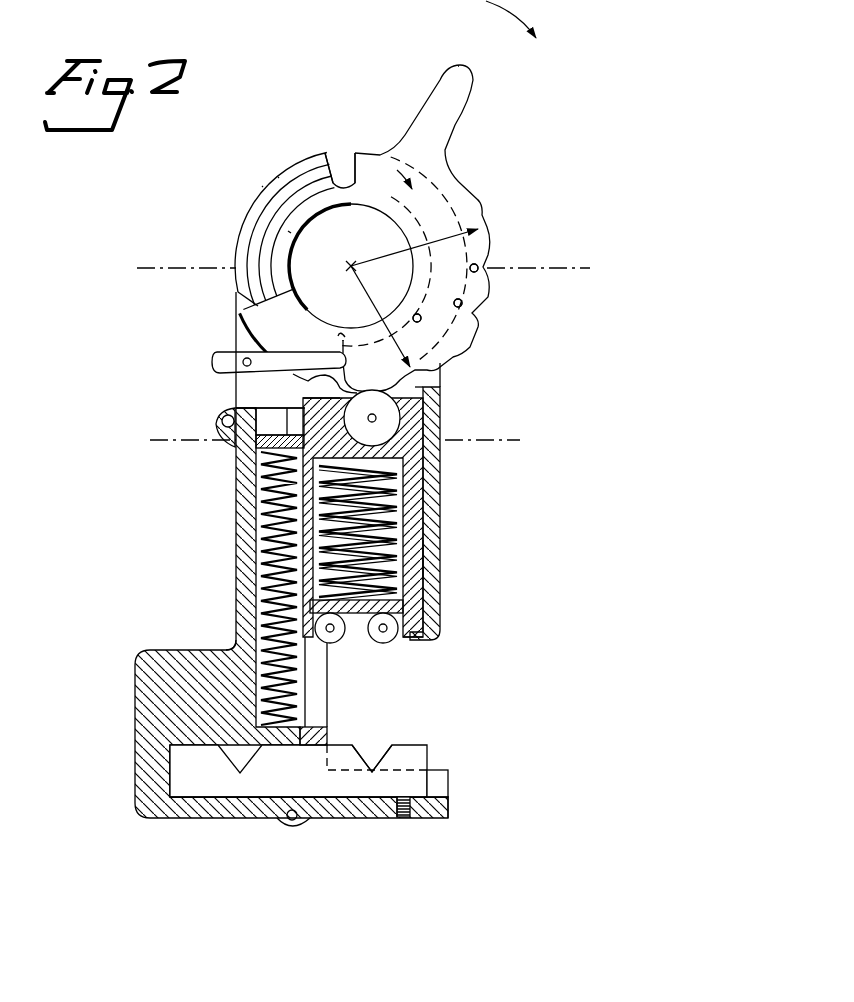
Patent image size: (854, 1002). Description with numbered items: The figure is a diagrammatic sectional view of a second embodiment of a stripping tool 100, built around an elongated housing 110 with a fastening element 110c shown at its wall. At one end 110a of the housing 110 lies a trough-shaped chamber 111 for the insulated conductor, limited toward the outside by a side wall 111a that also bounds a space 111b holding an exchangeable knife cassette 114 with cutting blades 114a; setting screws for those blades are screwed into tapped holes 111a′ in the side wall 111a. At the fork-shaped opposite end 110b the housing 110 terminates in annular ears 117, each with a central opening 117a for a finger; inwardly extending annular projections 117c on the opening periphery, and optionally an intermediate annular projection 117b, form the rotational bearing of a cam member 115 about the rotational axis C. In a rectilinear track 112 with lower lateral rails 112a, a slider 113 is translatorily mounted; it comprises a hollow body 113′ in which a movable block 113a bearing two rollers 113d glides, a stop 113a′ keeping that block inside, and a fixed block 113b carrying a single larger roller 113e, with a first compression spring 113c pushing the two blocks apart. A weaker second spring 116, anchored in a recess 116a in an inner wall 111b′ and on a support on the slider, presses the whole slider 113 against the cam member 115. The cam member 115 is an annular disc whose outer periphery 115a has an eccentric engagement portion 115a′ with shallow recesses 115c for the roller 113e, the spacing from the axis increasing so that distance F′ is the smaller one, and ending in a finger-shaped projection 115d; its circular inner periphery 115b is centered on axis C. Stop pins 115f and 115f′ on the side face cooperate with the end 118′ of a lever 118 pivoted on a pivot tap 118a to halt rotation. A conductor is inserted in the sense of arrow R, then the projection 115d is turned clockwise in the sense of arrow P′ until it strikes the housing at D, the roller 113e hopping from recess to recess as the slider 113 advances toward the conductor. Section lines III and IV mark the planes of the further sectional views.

The stripping tool 100 is at (510, 192).
The housing 110 is at (236, 540).
The end of housing 110a is at (448, 810).
The fork-shaped end of housing 110b is at (238, 406).
The fastening screw / pin 110c is at (221, 418).
The chamber 111 is at (375, 707).
The side wall 111a is at (330, 812).
The tapped holes 111a′ is at (406, 818).
The space 111b is at (442, 780).
The inner wall 111b′ is at (318, 733).
The track 112 is at (422, 530).
The lower lateral rails 112a is at (258, 628).
The slider 113 is at (410, 472).
The hollow body 113′ is at (425, 556).
The movable block 113a is at (403, 615).
The stop 113a′ is at (415, 638).
The fixed block 113b is at (320, 410).
The first compression spring 113c is at (395, 498).
The rollers 113d is at (345, 645).
The roller 113e is at (398, 423).
The knife cassette 114 is at (193, 793).
The cutting blades 114a is at (380, 748).
The cam member 115 is at (470, 205).
The outer periphery 115a is at (333, 150).
The engagement portion 115a′ is at (465, 303).
The circular inner periphery 115b is at (355, 152).
The recesses 115c is at (478, 232).
The finger-shaped projection 115d is at (462, 110).
The first stop means 115f is at (423, 320).
The stop pins 115f′ is at (480, 272).
The second spring 116 is at (270, 500).
The recess / support 116a is at (258, 448).
The annular ears 117 is at (238, 248).
The central opening of ear 117a is at (290, 232).
The annular projection 117b is at (270, 203).
The annular projections / rotational bearing 117c is at (300, 190).
The lever 118 is at (218, 356).
The pivot tap 118a is at (247, 358).
The end of lever 118′ is at (345, 338).
The rotational axis C is at (348, 262).
The stop position D is at (440, 388).
The arrow of clockwise rotation P′ is at (410, 193).
The distance F′ is at (352, 282).
The arrow of conductor insertion R is at (410, 713).
The view direction arrow V is at (483, 786).
The section line III- III is at (136, 278).
The section line IV- IV is at (148, 450).